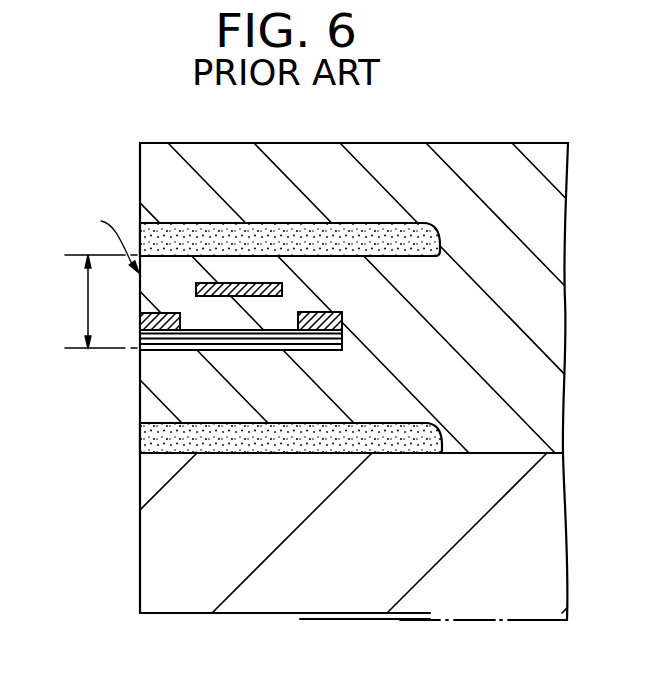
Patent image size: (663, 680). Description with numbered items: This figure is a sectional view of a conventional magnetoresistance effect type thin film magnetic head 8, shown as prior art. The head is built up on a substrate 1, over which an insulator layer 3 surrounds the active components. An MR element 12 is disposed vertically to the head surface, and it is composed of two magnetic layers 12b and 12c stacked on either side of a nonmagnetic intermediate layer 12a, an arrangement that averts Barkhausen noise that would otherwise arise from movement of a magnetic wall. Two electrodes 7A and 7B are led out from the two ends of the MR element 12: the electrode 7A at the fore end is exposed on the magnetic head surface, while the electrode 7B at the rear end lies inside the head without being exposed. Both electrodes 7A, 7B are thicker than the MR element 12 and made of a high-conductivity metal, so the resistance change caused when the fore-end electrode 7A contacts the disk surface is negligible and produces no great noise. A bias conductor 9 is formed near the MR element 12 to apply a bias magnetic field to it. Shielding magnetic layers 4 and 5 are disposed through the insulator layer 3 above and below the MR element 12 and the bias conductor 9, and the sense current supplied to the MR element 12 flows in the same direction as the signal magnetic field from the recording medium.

The semiconductor substrate 1 is at (565, 568).
The insulator layer 3 is at (500, 167).
The shielding magnetic layer 4 is at (391, 237).
The shielding magnetic layer 5 is at (250, 438).
The electrode 7A is at (165, 313).
The electrode 7B is at (343, 320).
The thin film magnetic head 8 is at (70, 142).
The bias conductor 9 is at (228, 283).
The MR element 12 is at (184, 407).
The nonmagnetic intermediate layer 12a is at (168, 342).
The magnetic layer 12b is at (152, 336).
The magnetic layer 12c is at (183, 349).